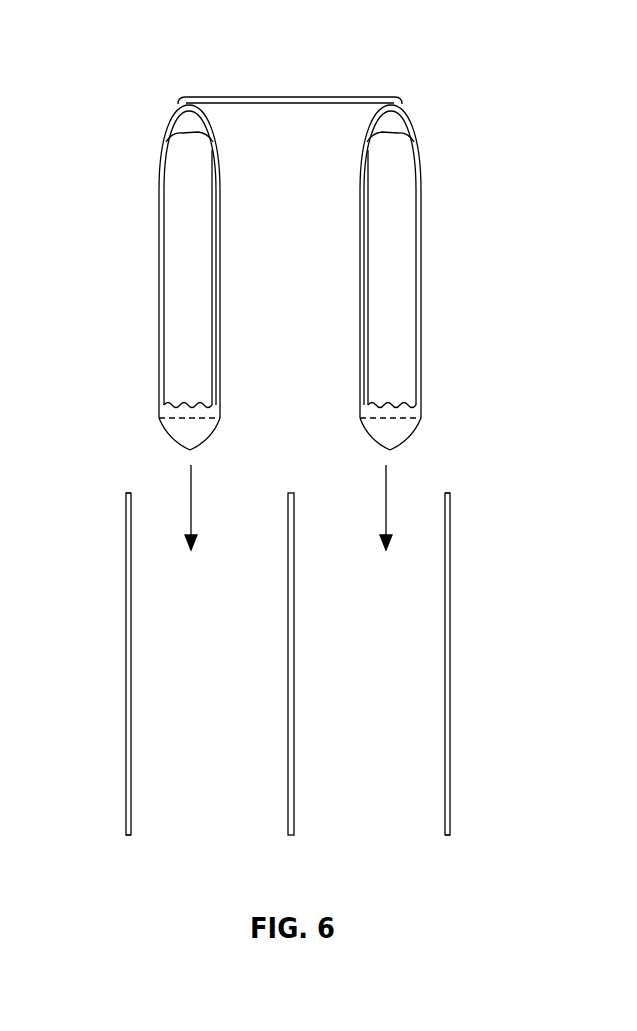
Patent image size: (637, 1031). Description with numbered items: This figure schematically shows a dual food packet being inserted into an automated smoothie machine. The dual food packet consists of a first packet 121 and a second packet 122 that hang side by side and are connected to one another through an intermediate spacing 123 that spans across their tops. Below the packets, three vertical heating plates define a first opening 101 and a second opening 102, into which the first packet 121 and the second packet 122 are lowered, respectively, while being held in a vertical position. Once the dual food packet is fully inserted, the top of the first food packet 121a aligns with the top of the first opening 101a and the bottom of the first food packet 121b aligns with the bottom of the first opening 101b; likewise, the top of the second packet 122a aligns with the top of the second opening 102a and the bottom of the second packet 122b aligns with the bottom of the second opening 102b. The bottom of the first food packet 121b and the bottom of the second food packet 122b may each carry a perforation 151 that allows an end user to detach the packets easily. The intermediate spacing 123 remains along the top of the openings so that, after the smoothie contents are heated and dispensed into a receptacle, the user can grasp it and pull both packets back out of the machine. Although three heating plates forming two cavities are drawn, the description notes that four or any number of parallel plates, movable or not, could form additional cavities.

The intermediate spacing 123 is at (308, 97).
The first packet 121 is at (177, 279).
The top of the first food packet 121a is at (170, 163).
The bottom of the first food packet 121b is at (186, 437).
The second packet 122 is at (404, 293).
The top of the second packet 122a is at (399, 163).
The bottom of the second food packet 122b is at (394, 438).
The perforation 151 is at (172, 413).
The first opening 101 is at (138, 687).
The top of the first opening 101a is at (146, 525).
The bottom of the first opening 101b is at (148, 790).
The second opening 102 is at (425, 674).
The top of the second opening 102a is at (432, 524).
The bottom of the second opening 102b is at (430, 818).